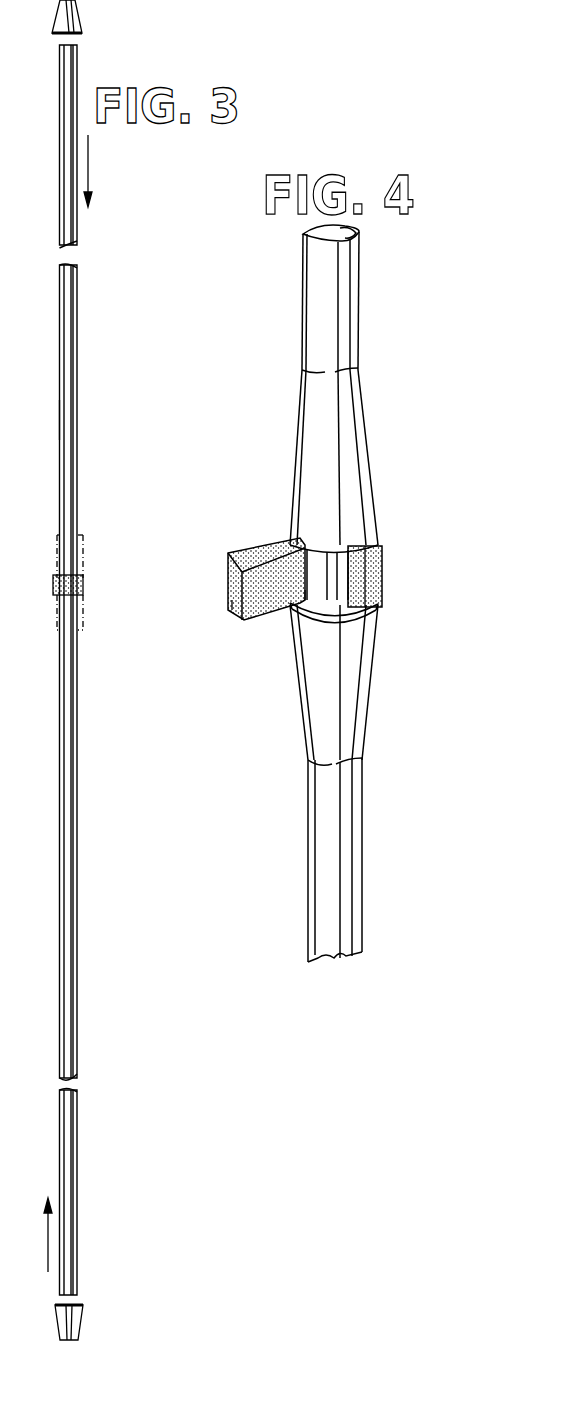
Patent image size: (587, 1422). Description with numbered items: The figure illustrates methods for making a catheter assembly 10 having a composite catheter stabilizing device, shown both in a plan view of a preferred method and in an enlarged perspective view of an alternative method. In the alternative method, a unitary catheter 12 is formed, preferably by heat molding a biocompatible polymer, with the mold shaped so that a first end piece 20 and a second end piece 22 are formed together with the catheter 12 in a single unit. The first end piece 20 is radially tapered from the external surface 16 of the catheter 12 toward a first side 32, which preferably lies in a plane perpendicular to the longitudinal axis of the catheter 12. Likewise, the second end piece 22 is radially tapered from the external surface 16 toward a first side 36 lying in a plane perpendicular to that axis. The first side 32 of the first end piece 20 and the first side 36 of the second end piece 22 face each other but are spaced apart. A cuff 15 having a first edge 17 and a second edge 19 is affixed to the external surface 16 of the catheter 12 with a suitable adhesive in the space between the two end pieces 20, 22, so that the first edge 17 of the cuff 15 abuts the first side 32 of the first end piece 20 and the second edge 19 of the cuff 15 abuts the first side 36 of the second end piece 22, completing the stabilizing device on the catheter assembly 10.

In FIG. 4, the catheter assembly 10 is at (400, 407).
In FIG. 3, the catheter 12 is at (82, 843).
In FIG. 4, the catheter 12 is at (360, 328).
In FIG. 3, the cuff 15 is at (83, 585).
In FIG. 4, the cuff 15 is at (276, 606).
In FIG. 3, the external surface 16 is at (77, 420).
In FIG. 4, the external surface 16 is at (330, 575).
In FIG. 3, the first edge 17 is at (57, 578).
In FIG. 4, the first edge 17 is at (262, 555).
In FIG. 3, the second edge 19 is at (58, 598).
In FIG. 4, the second edge 19 is at (248, 626).
In FIG. 3, the first end piece 20 is at (78, 13).
In FIG. 4, the first end piece 20 is at (375, 468).
In FIG. 3, the second end piece 22 is at (78, 1318).
In FIG. 4, the second end piece 22 is at (372, 672).
In FIG. 3, the first side 32 is at (82, 578).
In FIG. 4, the first side 32 is at (375, 541).
In FIG. 3, the first side 36 is at (83, 598).
In FIG. 4, the first side 36 is at (378, 600).